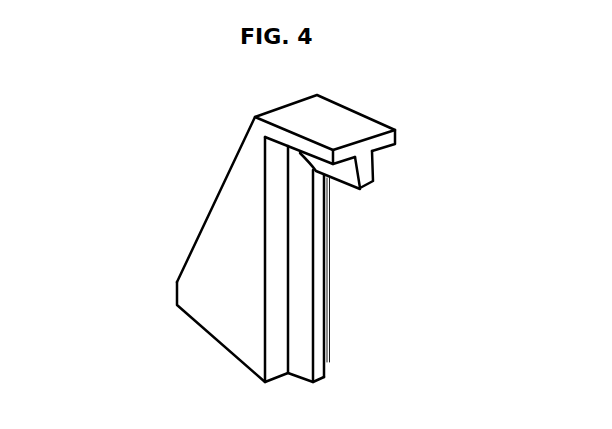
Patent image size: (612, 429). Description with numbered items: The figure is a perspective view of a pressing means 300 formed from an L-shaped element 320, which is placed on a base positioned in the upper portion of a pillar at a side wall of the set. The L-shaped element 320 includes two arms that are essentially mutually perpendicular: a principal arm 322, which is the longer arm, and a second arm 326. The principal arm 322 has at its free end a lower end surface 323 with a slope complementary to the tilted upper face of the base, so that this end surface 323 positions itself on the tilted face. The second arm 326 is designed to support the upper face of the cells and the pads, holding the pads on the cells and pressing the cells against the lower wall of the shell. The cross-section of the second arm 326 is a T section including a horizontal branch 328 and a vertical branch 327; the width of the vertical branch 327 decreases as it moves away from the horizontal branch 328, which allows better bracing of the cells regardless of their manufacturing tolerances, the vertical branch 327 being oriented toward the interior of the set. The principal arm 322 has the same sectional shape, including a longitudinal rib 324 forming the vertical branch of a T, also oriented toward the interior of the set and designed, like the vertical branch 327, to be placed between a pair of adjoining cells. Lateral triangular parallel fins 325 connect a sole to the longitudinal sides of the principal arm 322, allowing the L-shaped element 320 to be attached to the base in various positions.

The pressing means 300 is at (131, 168).
The L-shaped element 320 is at (350, 365).
The principal arm 322 is at (186, 236).
The lower end surface 323 is at (217, 360).
The longitudinal rib 324 is at (322, 285).
The lateral triangular parallel fins 325 is at (228, 232).
The second arm 326 is at (404, 172).
The vertical branch 327 is at (369, 173).
The horizontal branch 328 is at (328, 122).